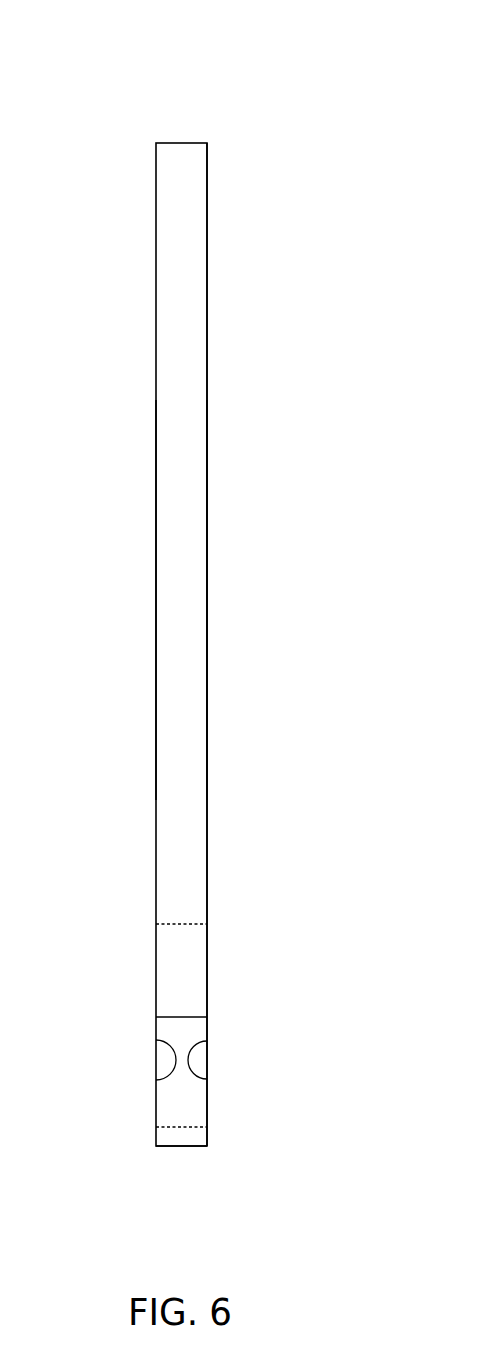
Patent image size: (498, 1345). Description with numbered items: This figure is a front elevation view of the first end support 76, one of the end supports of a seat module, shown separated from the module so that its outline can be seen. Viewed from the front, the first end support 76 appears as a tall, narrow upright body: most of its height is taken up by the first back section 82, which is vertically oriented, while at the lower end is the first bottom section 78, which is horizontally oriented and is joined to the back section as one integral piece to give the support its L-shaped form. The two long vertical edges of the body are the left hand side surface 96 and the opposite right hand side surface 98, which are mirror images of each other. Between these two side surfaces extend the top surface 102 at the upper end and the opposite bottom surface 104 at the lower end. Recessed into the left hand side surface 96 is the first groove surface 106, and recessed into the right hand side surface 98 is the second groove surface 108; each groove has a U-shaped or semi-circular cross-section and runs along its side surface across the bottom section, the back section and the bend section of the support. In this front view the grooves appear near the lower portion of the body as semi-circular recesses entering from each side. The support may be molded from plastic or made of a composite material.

The first end support 76 is at (182, 143).
The first back section 82 is at (207, 333).
The left hand side surface 96 is at (156, 590).
The right hand side surface 98 is at (207, 590).
The top surface 102 is at (195, 861).
The first groove surface 106 is at (170, 1060).
The second groove surface 108 is at (190, 1060).
The first bottom section 78 is at (207, 1119).
The bottom surface 104 is at (180, 1147).